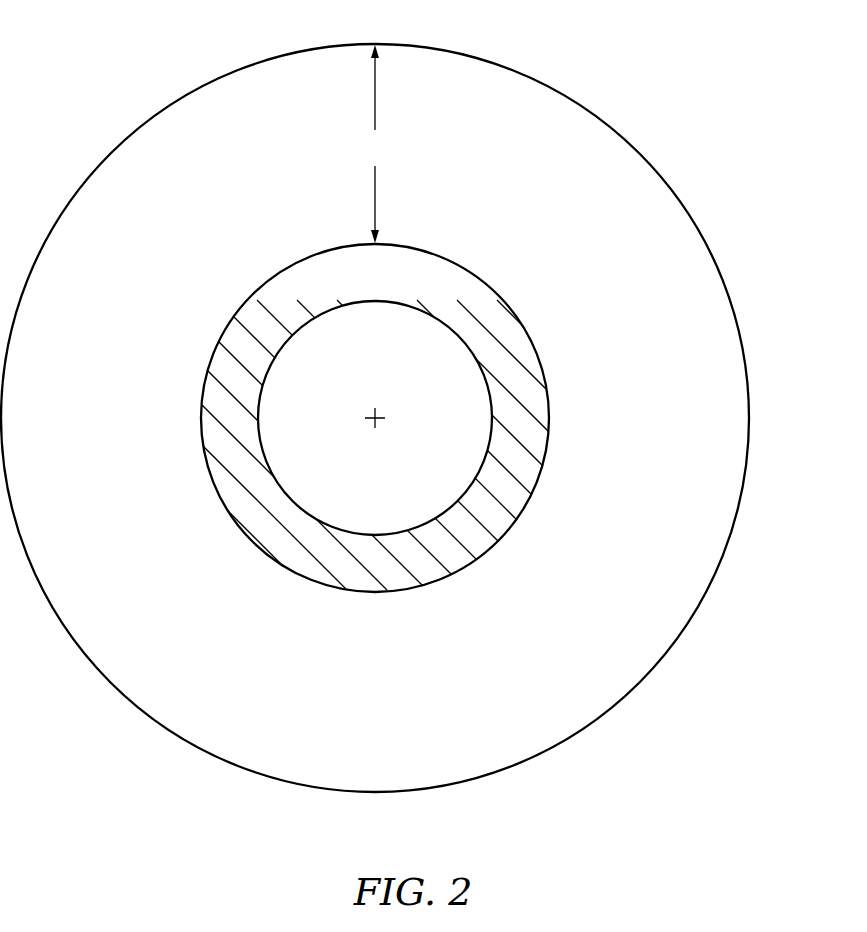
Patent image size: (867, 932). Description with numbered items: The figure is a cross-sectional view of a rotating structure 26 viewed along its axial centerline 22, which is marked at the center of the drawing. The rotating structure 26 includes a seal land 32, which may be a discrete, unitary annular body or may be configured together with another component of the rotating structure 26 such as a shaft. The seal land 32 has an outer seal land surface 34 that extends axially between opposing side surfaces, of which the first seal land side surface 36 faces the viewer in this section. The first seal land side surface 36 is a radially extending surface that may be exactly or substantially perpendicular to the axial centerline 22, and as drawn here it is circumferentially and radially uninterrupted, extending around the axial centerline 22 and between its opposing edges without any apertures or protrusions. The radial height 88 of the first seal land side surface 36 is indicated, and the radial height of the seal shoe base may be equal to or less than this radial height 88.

The rotating structure 26 is at (642, 85).
The seal land 32 is at (711, 218).
The outer seal land surface 34 is at (732, 300).
The first seal land side surface 36 is at (685, 382).
The axial centerline 22 is at (378, 422).
The radial height 88 is at (375, 144).